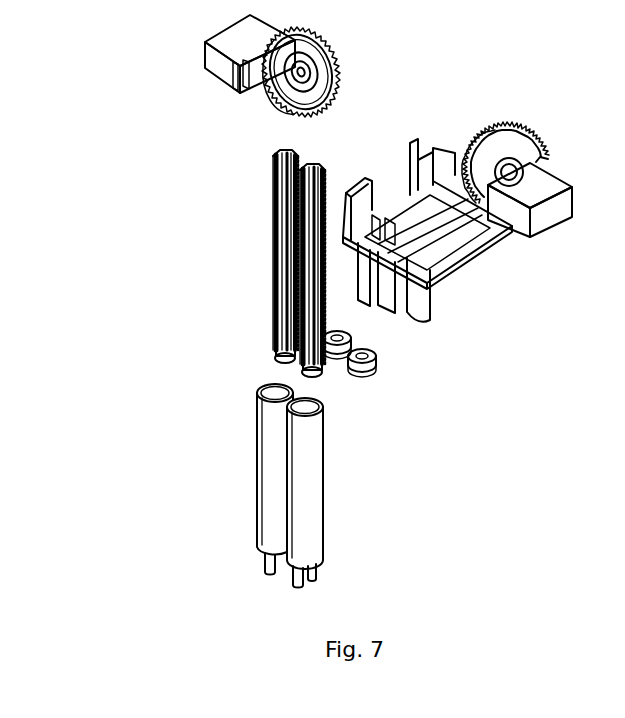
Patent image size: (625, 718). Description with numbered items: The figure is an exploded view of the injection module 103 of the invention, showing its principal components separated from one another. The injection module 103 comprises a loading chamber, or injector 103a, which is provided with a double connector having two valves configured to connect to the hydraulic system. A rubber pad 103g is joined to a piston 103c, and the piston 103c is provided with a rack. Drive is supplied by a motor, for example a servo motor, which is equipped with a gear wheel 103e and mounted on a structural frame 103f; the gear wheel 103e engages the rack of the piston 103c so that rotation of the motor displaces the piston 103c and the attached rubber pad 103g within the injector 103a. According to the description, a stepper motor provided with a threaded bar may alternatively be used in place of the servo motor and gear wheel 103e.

The injection module 103 is at (118, 197).
The injector 103a is at (325, 470).
The piston 103c is at (277, 241).
The gear wheel 103e is at (333, 82).
The structural frame 103f is at (465, 270).
The rubber pad 103g is at (378, 362).